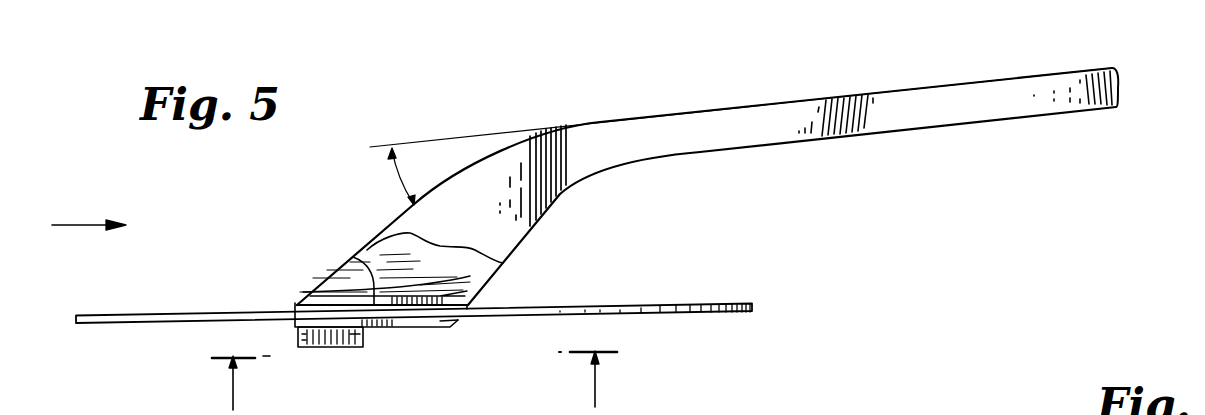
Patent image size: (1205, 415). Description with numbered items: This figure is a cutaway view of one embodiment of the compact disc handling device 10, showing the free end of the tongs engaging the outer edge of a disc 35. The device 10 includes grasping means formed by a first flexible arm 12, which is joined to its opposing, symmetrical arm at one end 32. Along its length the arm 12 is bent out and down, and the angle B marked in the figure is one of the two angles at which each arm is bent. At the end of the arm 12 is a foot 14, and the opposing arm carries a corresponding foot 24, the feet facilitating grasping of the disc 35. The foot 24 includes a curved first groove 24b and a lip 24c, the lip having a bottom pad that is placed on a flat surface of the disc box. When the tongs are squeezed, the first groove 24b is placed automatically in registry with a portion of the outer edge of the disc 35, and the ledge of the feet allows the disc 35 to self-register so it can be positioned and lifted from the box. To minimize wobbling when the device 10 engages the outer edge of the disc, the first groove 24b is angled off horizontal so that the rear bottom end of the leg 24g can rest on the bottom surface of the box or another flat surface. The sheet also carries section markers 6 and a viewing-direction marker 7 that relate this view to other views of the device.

The device for handling compact discs 10 is at (548, 105).
The first flexible arm 12 is at (815, 104).
The foot 14 is at (533, 222).
The foot 24 is at (489, 270).
The curved first groove 24b is at (355, 258).
The lip 24c is at (340, 347).
The rear bottom end of the leg 24g is at (443, 327).
The end 32 is at (1120, 89).
The disc 35 is at (657, 304).
The angle B is at (392, 176).
The section line 6- 6 is at (407, 380).
The viewing direction 7 is at (84, 211).